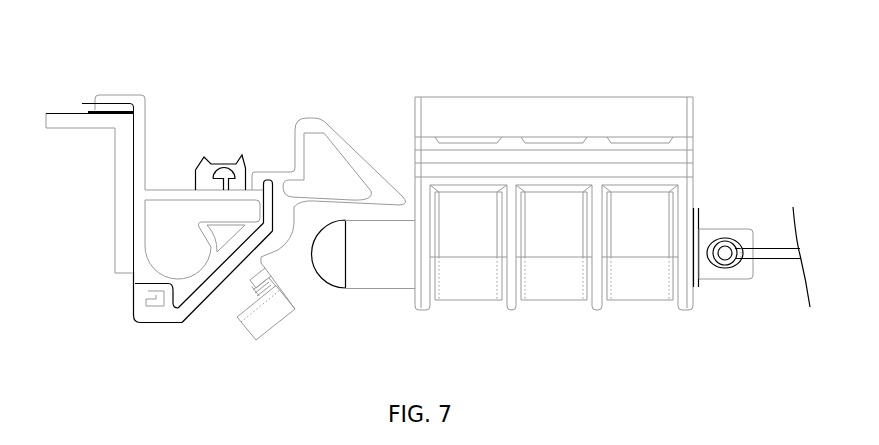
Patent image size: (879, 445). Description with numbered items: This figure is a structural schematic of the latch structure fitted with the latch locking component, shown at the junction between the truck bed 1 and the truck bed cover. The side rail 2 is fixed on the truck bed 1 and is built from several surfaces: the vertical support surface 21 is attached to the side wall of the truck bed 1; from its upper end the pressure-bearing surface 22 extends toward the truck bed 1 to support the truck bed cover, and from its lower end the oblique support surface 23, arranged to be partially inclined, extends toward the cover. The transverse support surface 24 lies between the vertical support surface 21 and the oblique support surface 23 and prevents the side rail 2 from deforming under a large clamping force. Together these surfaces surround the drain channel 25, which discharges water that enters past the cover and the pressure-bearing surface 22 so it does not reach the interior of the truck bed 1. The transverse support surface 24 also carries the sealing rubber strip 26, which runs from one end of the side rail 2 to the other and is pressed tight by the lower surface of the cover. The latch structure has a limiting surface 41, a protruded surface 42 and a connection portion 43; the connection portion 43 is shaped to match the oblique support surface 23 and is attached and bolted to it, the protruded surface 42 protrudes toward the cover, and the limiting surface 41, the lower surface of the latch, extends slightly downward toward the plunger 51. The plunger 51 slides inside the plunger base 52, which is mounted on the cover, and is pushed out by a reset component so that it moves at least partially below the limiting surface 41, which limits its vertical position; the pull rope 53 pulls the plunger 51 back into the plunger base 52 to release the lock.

The truck bed 1 is at (80, 118).
The side rail 2 is at (221, 82).
The vertical support surface 21 is at (145, 142).
The pressure-bearing surface 22 is at (117, 95).
The oblique support surface 23 is at (210, 277).
The transverse support surface 24 is at (163, 196).
The drain channel 25 is at (175, 262).
The sealing rubber strip 26 is at (208, 170).
The limiting surface 41 is at (340, 200).
The protruded surface 42 is at (312, 118).
The connection portion 43 is at (262, 259).
The plunger 51 is at (360, 258).
The plunger base 52 is at (515, 247).
The pull rope 53 is at (773, 255).